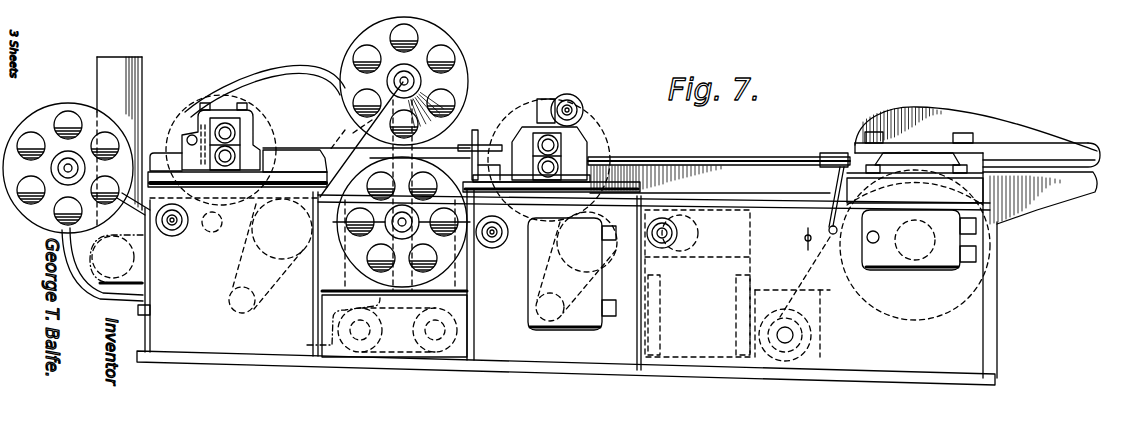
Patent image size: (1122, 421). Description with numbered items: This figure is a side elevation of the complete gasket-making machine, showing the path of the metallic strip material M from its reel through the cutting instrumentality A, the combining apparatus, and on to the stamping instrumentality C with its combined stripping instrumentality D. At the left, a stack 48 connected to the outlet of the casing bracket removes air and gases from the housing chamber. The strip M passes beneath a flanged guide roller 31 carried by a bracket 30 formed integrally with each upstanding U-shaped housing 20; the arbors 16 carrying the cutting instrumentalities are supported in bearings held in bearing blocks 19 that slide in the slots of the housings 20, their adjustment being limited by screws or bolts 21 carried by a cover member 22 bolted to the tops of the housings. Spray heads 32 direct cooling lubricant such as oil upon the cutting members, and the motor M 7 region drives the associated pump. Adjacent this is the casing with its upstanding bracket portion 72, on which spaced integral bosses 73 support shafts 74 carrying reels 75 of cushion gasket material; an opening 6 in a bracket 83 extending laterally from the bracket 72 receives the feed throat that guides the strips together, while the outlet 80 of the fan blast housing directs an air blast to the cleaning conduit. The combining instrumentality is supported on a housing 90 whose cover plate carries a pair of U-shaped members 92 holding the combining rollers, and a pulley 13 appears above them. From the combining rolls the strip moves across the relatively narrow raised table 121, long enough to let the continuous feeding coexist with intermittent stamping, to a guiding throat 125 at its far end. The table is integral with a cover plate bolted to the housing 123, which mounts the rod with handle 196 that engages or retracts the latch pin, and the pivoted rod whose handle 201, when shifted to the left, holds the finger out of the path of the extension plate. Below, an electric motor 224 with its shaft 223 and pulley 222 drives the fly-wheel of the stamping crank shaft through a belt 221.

The stack 48 is at (124, 66).
The metallic strip material M is at (69, 126).
The motor pulley hub 7 is at (185, 145).
The bracket 30 is at (219, 96).
The flanged guide roller 31 is at (197, 99).
The screws or bolts 21 is at (224, 112).
The cover member 22 is at (224, 110).
The cutting instrumentality A is at (232, 114).
The bearing blocks 19 is at (264, 133).
The arbors 16 is at (222, 162).
The upstanding U-shaped housings 20 is at (243, 167).
The spray heads 32 is at (158, 213).
The reels 75 is at (372, 33).
The bosses 73 is at (406, 78).
The wheel opening 6 is at (446, 58).
The shafts 74 is at (412, 82).
The upstanding bracket portion 72 is at (464, 124).
The bracket 83 is at (461, 134).
The outlet 80 is at (390, 162).
The housing or casing 90 is at (546, 275).
The pulley 13 is at (556, 98).
The U-shaped members 92 is at (577, 143).
The table 121 is at (699, 150).
The guiding throat 125 is at (840, 136).
The stamping instrumentality C is at (930, 108).
The stripping instrumentality D is at (1063, 147).
The handle 201 is at (829, 215).
The handle 196 is at (806, 242).
The housing 123 is at (697, 283).
The shaft 223 is at (775, 352).
The pulley 222 is at (787, 346).
The electric motor 224 is at (810, 360).
The belt 221 is at (900, 326).